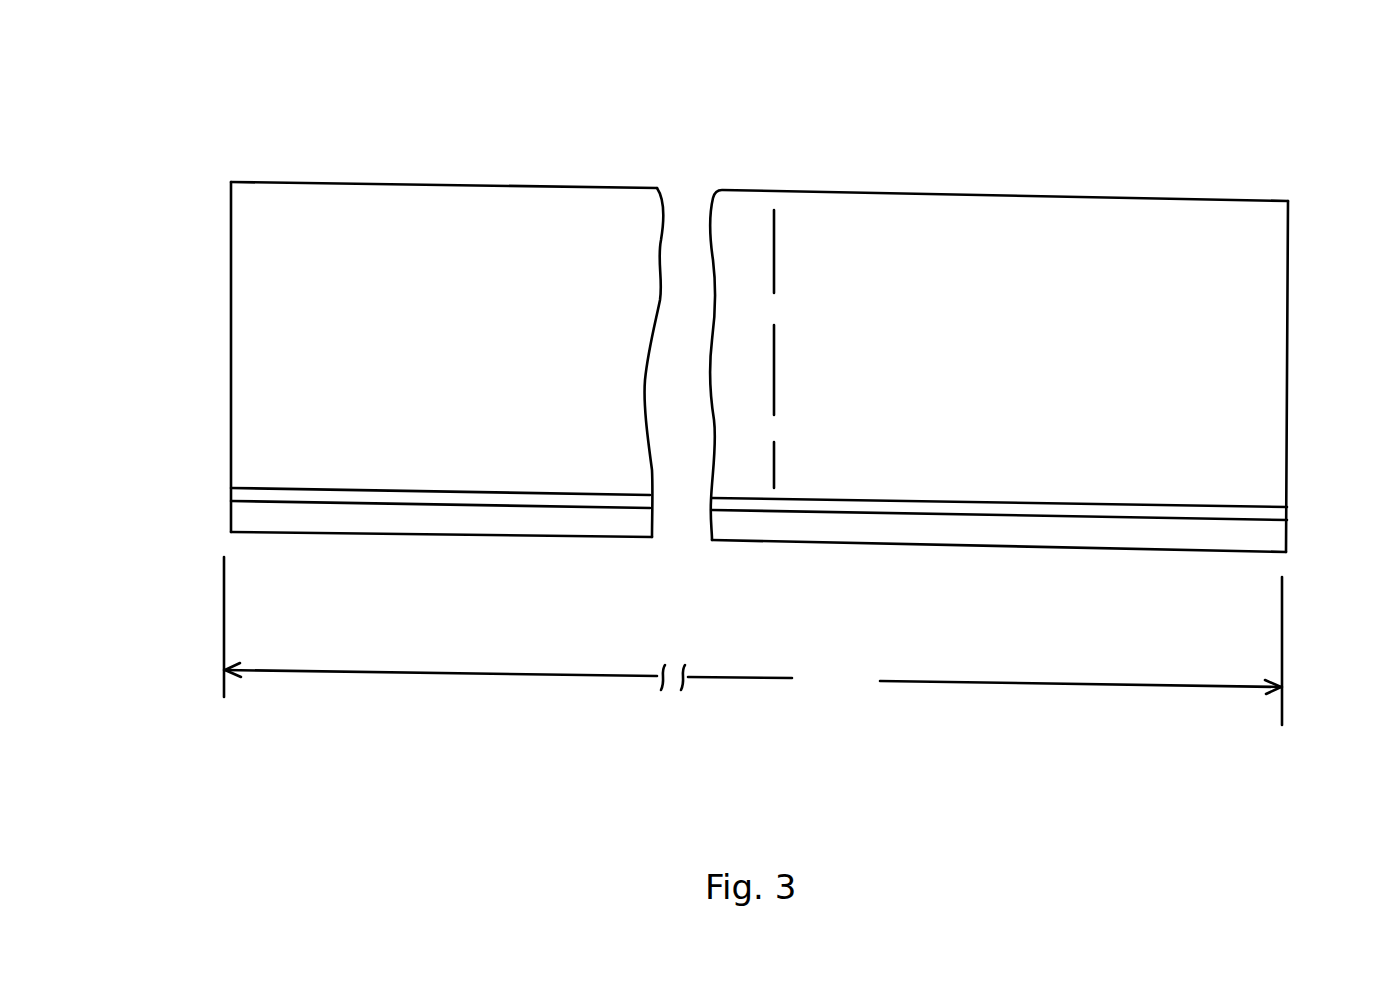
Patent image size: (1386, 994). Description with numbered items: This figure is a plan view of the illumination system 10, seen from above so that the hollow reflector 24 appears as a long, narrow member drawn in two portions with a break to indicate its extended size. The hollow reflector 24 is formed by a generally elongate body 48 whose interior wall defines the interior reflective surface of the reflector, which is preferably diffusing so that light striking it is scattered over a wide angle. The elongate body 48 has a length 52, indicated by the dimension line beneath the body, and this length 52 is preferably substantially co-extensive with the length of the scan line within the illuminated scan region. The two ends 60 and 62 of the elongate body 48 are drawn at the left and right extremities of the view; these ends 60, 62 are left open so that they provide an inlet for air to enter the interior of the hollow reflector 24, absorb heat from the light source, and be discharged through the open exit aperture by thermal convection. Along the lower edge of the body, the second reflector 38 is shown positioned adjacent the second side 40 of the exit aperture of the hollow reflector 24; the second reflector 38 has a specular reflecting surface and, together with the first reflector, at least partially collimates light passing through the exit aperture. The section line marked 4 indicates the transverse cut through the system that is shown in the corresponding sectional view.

The illumination system 10 is at (219, 102).
The hollow reflector 24 is at (452, 171).
The elongate body 48 is at (1110, 198).
The end 60 is at (230, 249).
The end 62 is at (1290, 289).
The second reflector 38 is at (408, 508).
The second side 40 is at (578, 497).
The length 52 is at (753, 641).
The section line 4- 4 is at (774, 173).